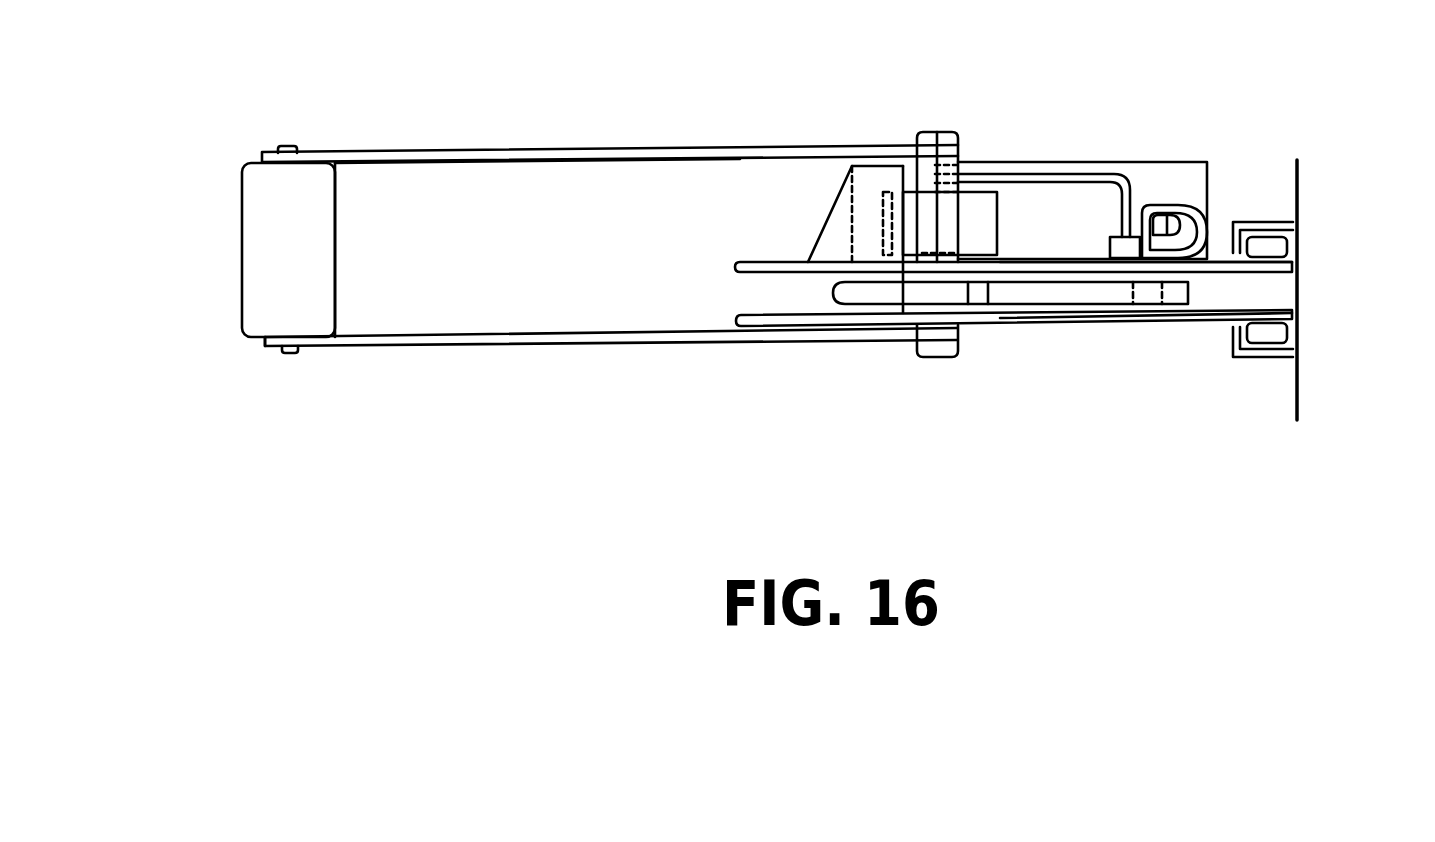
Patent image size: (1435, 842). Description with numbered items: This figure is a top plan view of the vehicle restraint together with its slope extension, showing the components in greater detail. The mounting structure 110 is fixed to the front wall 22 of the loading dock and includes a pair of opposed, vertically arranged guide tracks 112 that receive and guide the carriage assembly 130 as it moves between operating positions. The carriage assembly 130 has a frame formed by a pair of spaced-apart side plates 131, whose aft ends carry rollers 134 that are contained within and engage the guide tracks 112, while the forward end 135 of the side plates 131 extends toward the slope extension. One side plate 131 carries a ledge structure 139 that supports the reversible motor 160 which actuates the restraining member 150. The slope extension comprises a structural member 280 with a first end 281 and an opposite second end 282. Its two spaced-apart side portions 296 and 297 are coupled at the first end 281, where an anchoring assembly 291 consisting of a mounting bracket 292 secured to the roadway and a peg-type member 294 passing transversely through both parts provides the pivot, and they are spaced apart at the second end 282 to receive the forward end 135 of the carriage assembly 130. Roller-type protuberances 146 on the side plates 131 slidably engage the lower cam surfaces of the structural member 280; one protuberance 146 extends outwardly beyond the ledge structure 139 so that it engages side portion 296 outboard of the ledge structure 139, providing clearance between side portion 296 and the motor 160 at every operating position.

The front wall 22 is at (1295, 190).
The mounting structure 110 is at (1268, 382).
The guide tracks 112 is at (1233, 220).
The carriage assembly 130 is at (1141, 348).
The side plates 131 is at (1063, 258).
The rollers 134 is at (1280, 247).
The forward end 135 is at (737, 265).
The ledge structure 139 is at (1160, 162).
The protuberances 146 is at (918, 133).
The restraining member 150 is at (883, 292).
The reversible motor 160 is at (1000, 223).
The structural member 280 is at (568, 343).
The first end 281 is at (322, 152).
The second end 282 is at (945, 137).
The anchoring assembly 291 is at (228, 156).
The mounting bracket 292 is at (265, 342).
The peg-type member 294 is at (290, 353).
The side portion 296 is at (700, 147).
The side portion 297 is at (803, 345).